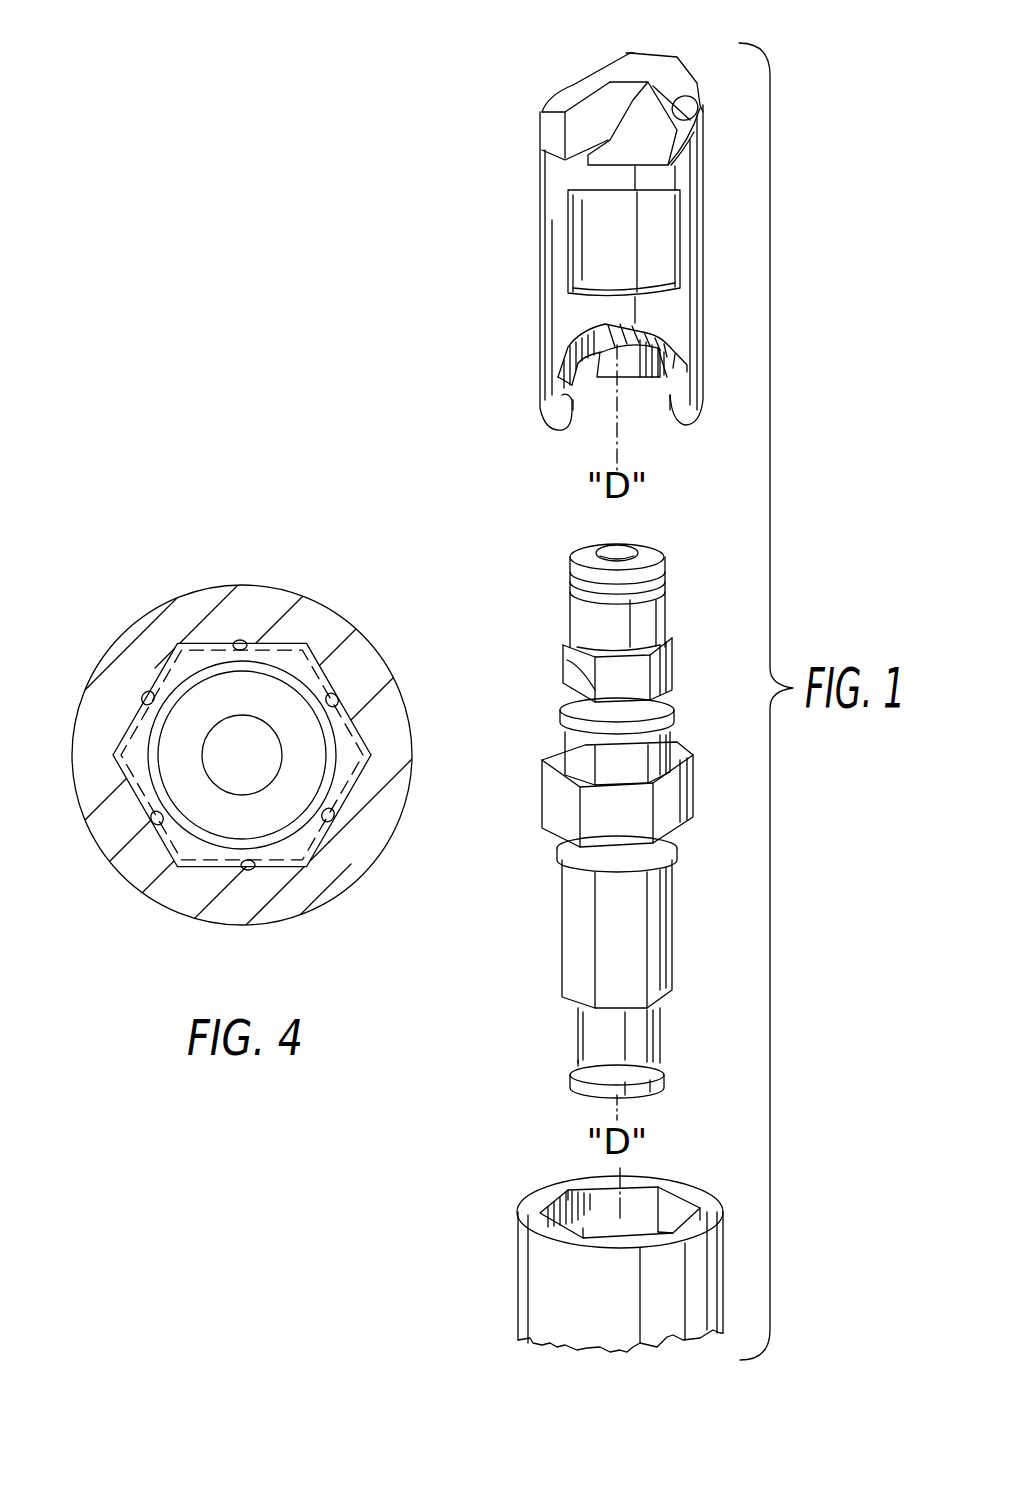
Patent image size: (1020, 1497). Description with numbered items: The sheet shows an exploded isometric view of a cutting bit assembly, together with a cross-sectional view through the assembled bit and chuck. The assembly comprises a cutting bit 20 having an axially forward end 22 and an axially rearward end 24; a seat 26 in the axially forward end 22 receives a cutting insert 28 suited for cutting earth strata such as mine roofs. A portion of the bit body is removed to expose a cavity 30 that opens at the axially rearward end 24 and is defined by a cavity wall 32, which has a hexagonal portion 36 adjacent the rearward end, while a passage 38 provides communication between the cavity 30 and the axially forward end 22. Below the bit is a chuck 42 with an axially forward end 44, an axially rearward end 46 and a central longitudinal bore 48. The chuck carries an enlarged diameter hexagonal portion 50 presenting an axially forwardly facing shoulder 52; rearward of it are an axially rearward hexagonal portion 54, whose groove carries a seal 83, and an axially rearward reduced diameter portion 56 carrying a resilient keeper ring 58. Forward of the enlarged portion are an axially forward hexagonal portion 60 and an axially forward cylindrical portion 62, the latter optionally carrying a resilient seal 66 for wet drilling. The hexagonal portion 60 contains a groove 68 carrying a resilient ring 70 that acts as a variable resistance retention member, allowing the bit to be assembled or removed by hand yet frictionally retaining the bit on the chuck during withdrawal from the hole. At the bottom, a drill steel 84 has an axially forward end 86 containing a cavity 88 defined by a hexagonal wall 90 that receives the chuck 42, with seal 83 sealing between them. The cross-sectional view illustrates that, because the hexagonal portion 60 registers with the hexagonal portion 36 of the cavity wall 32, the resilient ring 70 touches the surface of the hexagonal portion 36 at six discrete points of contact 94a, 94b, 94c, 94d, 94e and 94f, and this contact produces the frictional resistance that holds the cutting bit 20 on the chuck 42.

In FIG. 1, the cutting bit 20 is at (596, 237).
In FIG. 4, the cutting bit 20 is at (372, 624).
In FIG. 1, the axially forward end 22 is at (690, 160).
In FIG. 1, the axially rearward end 24 is at (683, 418).
In FIG. 1, the seat 26 is at (617, 85).
In FIG. 1, the cutting insert 28 is at (630, 53).
In FIG. 1, the cavity 30 is at (583, 405).
In FIG. 1, the cavity wall 32 is at (565, 388).
In FIG. 1, the hexagonal portion 36 is at (675, 375).
In FIG. 4, the hexagonal portion 36 is at (182, 642).
In FIG. 1, the passage 38 is at (690, 110).
In FIG. 1, the chuck 42 is at (619, 802).
In FIG. 4, the chuck 42 is at (167, 783).
In FIG. 1, the axially forward end 44 is at (617, 573).
In FIG. 1, the axially rearward end 46 is at (657, 1082).
In FIG. 1, the central longitudinal bore 48 is at (607, 550).
In FIG. 1, the enlarged diameter hexagonal portion 50 is at (693, 790).
In FIG. 1, the axially forwardly facing shoulder 52 is at (683, 747).
In FIG. 1, the axially rearward hexagonal portion 54 is at (662, 912).
In FIG. 1, the axially rearward reduced diameter portion 56 is at (577, 1062).
In FIG. 1, the resilient keeper ring 58 is at (650, 1025).
In FIG. 1, the axially forward hexagonal portion 60 is at (660, 670).
In FIG. 4, the axially forward hexagonal portion 60 is at (308, 645).
In FIG. 1, the axially forward cylindrical portion 62 is at (650, 615).
In FIG. 1, the resilient seal 66 is at (573, 586).
In FIG. 1, the groove 68 is at (598, 710).
In FIG. 1, the resilient ring 70 is at (568, 710).
In FIG. 4, the resilient ring 70 is at (290, 842).
In FIG. 1, the seal 83 is at (663, 845).
In FIG. 1, the drill steel 84 is at (609, 1241).
In FIG. 1, the axially forward end 86 is at (710, 1210).
In FIG. 1, the cavity 88 is at (603, 1200).
In FIG. 1, the hexagonal wall 90 is at (673, 1207).
In FIG. 4, the point of contact 94a is at (150, 697).
In FIG. 4, the point of contact 94b is at (242, 643).
In FIG. 4, the point of contact 94c is at (337, 700).
In FIG. 4, the point of contact 94d is at (327, 817).
In FIG. 4, the point of contact 94e is at (247, 857).
In FIG. 4, the point of contact 94f is at (158, 808).